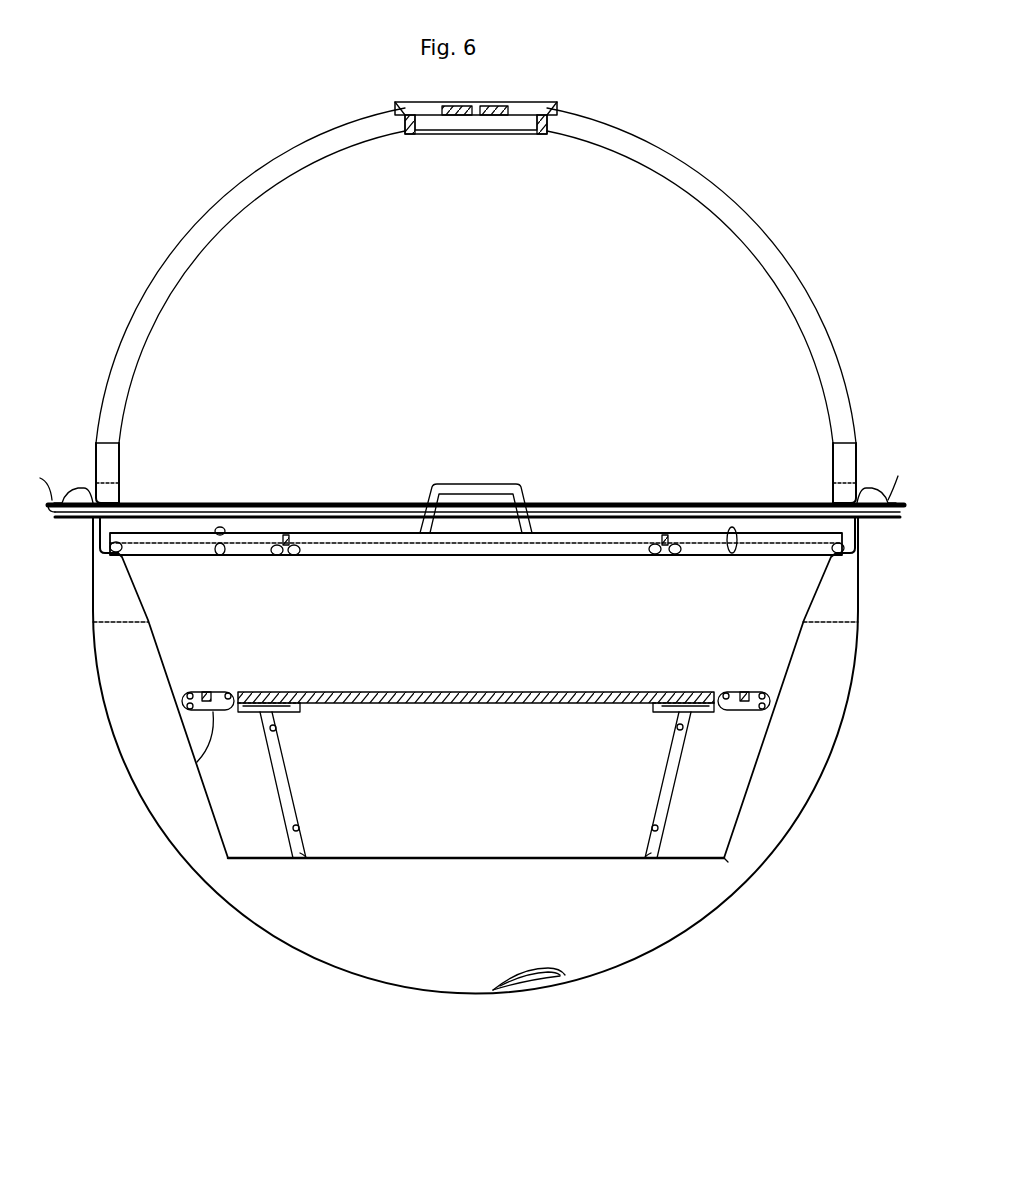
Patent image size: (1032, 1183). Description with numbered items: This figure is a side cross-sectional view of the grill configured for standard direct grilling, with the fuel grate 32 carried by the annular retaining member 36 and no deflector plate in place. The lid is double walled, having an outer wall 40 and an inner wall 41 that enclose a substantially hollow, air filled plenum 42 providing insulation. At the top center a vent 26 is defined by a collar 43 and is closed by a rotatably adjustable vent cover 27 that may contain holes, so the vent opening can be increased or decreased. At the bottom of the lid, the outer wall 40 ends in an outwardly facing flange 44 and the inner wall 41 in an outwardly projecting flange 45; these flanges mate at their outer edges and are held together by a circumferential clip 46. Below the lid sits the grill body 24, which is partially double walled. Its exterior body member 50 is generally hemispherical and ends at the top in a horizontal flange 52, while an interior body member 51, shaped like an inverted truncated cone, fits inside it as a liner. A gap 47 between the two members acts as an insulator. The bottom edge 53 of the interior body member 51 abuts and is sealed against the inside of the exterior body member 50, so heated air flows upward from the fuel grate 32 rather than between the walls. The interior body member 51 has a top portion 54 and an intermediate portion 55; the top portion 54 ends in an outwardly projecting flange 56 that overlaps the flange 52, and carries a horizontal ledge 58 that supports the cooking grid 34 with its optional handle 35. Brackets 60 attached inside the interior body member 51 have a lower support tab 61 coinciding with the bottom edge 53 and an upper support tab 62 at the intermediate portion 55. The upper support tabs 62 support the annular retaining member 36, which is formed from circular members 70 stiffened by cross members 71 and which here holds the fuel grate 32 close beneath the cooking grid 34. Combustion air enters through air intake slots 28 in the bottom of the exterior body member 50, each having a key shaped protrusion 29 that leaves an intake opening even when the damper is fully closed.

The grill body 24 is at (458, 756).
The vent 26 is at (527, 135).
The vent cover 27 is at (548, 101).
The air intake slots 28 is at (524, 992).
The key shaped protrusion 29 is at (576, 978).
The fuel grate 32 is at (538, 716).
The cooking grid 34 is at (850, 546).
The handle 35 is at (484, 485).
The annular retaining member 36 is at (781, 698).
The outer wall 40 is at (484, 305).
The inner wall 41 is at (806, 350).
The plenum 42 is at (768, 245).
The collar 43 is at (553, 125).
The outwardly facing flange 44 is at (904, 478).
The outwardly projecting flange 45 is at (88, 500).
The circumferential clip 46 is at (34, 481).
The gap 47 is at (120, 684).
The exterior body member 50 is at (284, 942).
The interior body member 51 is at (222, 850).
The flange 52 is at (888, 518).
The bottom edge 53 is at (722, 862).
The top portion 54 is at (98, 531).
The intermediate portion 55 is at (185, 730).
The outwardly projecting flange 56 is at (60, 514).
The ledge 58 is at (114, 558).
The brackets 60 is at (287, 775).
The lower support tab 61 is at (305, 858).
The upper support tab 62 is at (298, 707).
The circular members 70 is at (208, 694).
The cross members 71 is at (197, 762).